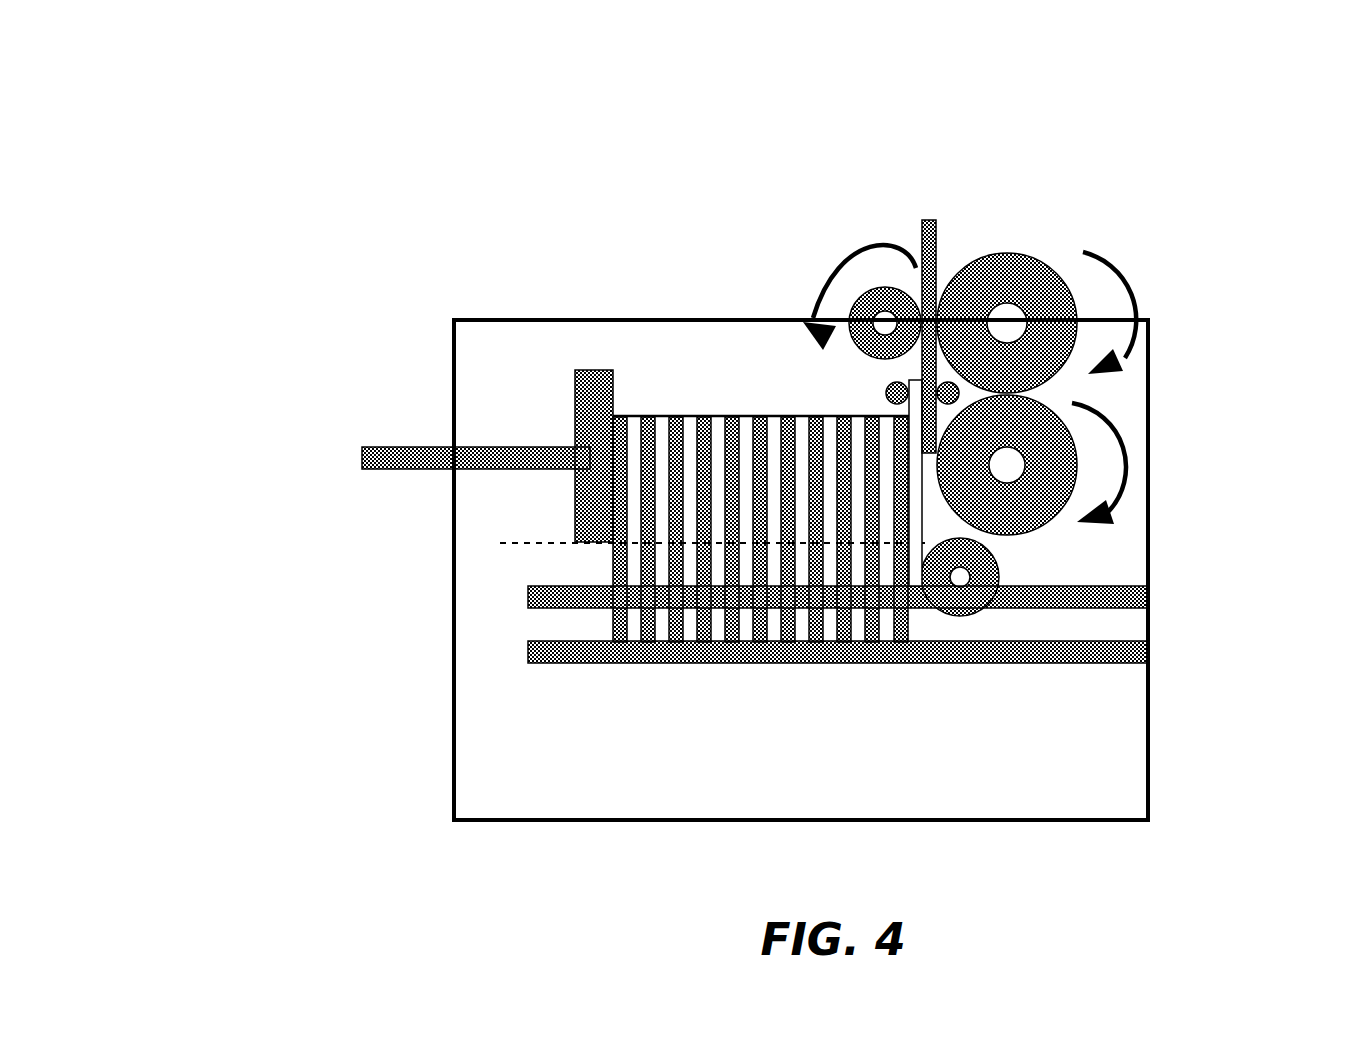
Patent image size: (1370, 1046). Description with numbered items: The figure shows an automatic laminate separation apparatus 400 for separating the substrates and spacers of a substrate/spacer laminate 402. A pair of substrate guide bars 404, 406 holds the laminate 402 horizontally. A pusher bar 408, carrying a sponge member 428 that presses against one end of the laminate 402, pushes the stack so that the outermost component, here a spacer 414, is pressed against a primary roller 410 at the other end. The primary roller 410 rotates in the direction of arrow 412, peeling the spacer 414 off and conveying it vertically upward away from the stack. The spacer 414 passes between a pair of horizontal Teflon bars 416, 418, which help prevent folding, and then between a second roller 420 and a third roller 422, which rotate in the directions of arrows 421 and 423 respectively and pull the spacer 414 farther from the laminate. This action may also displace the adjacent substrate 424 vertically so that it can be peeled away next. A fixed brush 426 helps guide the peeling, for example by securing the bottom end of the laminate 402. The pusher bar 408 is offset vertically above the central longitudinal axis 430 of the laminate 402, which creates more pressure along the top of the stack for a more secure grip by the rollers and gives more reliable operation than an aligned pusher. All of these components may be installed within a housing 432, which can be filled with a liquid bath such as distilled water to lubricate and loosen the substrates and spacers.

The automatic laminate separation apparatus 400 is at (247, 147).
The substrate/spacer laminate 402 is at (679, 380).
The substrate guide bar 404 is at (540, 585).
The substrate guide bar 406 is at (530, 643).
The pusher bar 408 is at (435, 455).
The primary roller 410 is at (1053, 517).
The rotation arrow 412 is at (1128, 457).
The spacer 414 is at (922, 228).
The horizontal Teflon bar 416 is at (886, 396).
The horizontal Teflon bar 418 is at (957, 385).
The second roller 420 is at (865, 345).
The rotation arrow 421 is at (817, 278).
The third roller 422 is at (1007, 277).
The rotation arrow 423 is at (1138, 285).
The substrate 424 is at (913, 524).
The fixed brush 426 is at (1000, 560).
The sponge member 428 is at (592, 370).
The central longitudinal axis 430 is at (548, 543).
The housing 432 is at (637, 807).